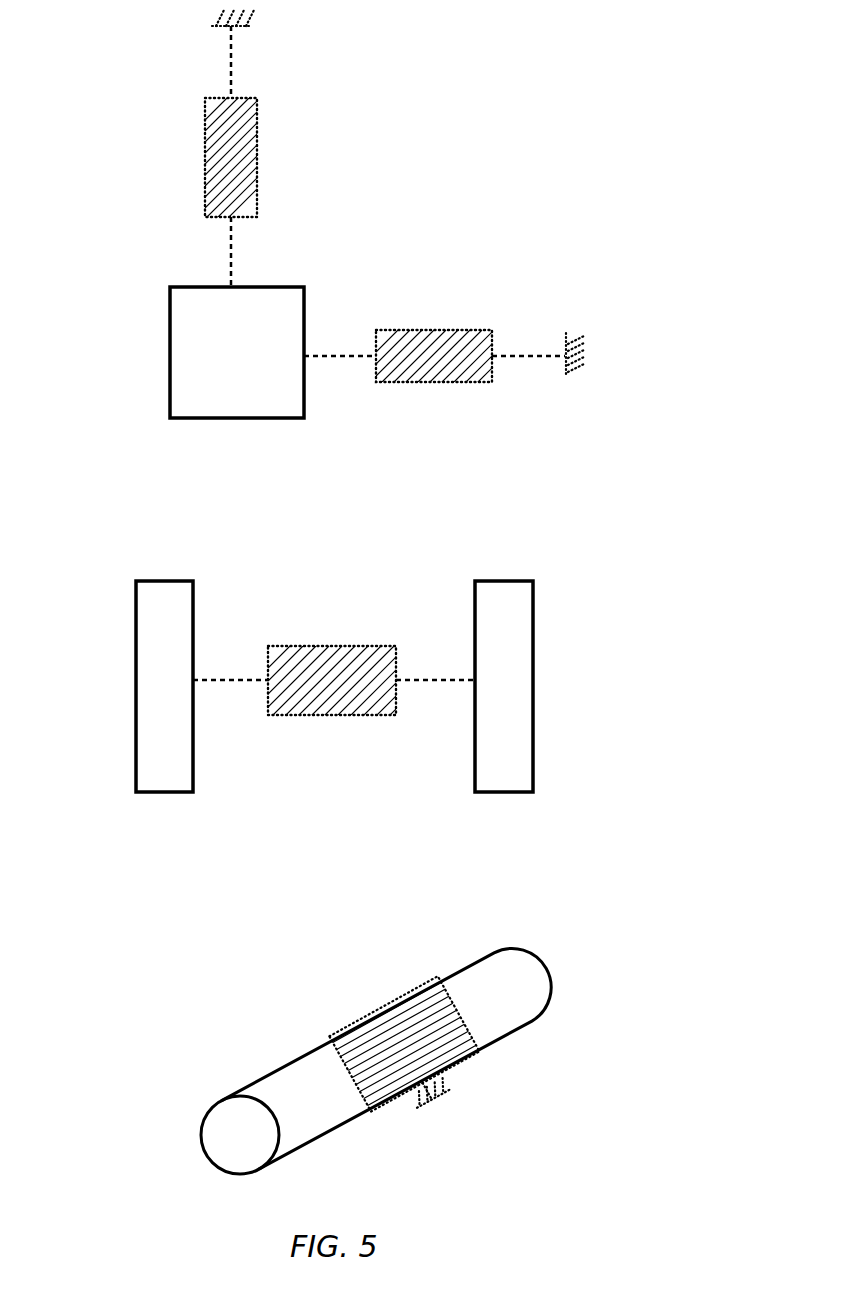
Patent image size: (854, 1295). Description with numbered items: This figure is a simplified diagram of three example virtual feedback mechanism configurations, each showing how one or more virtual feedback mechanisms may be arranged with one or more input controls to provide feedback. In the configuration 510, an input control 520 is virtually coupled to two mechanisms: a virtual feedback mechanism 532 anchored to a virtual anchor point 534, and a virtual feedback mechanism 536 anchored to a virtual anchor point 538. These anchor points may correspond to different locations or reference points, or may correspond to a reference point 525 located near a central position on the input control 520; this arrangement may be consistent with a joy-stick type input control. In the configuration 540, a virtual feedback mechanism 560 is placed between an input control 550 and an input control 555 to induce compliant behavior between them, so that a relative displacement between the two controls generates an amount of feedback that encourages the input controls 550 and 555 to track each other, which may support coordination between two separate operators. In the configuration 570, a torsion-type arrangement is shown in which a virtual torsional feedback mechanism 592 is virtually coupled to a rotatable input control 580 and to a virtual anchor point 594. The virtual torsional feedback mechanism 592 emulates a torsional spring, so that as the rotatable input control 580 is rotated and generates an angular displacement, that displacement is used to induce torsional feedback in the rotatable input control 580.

The configuration 510 is at (460, 65).
The input control 520 is at (168, 333).
The reference point 525 is at (234, 357).
The virtual feedback mechanism 532 is at (434, 330).
The virtual anchor point 534 is at (565, 335).
The virtual feedback mechanism 536 is at (205, 152).
The virtual anchor point 538 is at (212, 27).
The configuration 540 is at (88, 531).
The input control 550 is at (136, 660).
The input control 555 is at (533, 655).
The virtual feedback mechanism 560 is at (328, 646).
The configuration 570 is at (143, 961).
The rotatable input control 580 is at (223, 1100).
The virtual torsional feedback mechanism 592 is at (372, 1020).
The virtual anchor point 594 is at (455, 1093).